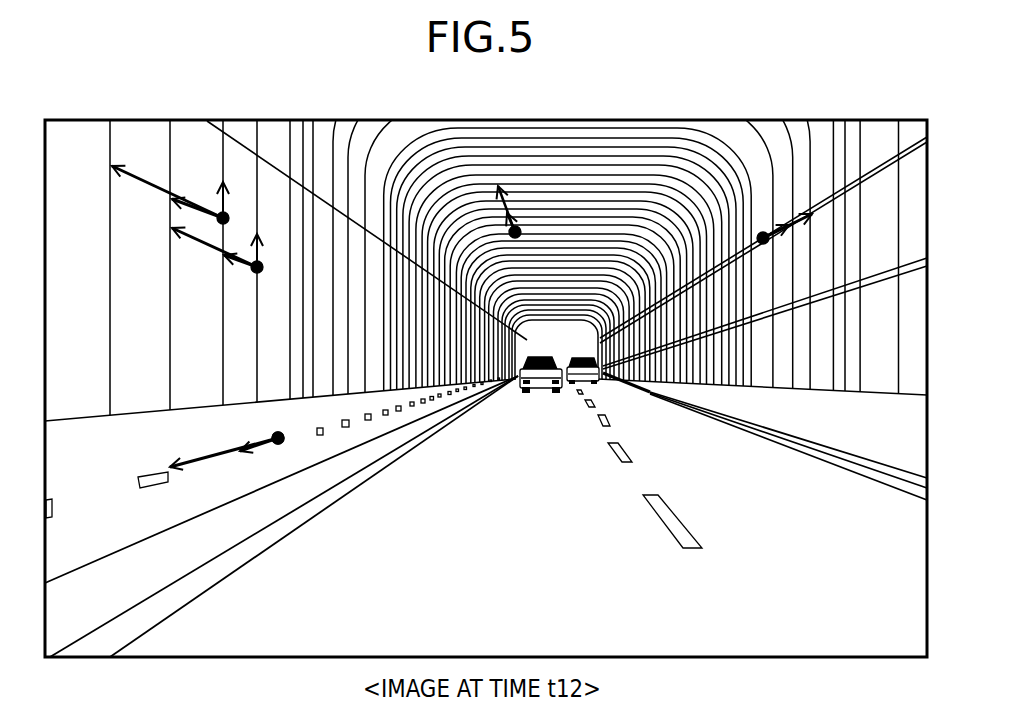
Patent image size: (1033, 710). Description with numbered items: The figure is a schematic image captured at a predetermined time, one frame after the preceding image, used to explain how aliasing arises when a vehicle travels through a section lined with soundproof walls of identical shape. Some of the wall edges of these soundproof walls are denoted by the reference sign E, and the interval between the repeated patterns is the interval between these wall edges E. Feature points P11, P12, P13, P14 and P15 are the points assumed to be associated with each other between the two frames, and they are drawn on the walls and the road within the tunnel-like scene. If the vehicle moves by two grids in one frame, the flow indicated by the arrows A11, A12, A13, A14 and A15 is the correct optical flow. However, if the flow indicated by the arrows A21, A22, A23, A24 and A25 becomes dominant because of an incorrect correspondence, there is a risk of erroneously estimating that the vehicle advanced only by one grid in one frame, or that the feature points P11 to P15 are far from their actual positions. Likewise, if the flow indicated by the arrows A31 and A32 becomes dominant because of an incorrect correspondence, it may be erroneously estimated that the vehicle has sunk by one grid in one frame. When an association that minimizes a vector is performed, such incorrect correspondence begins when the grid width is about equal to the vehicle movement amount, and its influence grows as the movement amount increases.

The feature point P11 is at (226, 214).
The feature point P12 is at (281, 426).
The feature point P13 is at (280, 444).
The feature point P14 is at (613, 121).
The feature point P15 is at (762, 246).
The arrow A11 is at (145, 180).
The arrow A12 is at (207, 242).
The arrow A13 is at (202, 460).
The arrow A14 is at (503, 195).
The arrow A15 is at (785, 232).
The arrow A21 is at (168, 204).
The arrow A22 is at (235, 265).
The arrow A23 is at (245, 452).
The arrow A24 is at (507, 228).
The arrow A25 is at (767, 222).
The arrow A31 is at (218, 205).
The arrow A32 is at (260, 242).
The wall edge E is at (644, 133).